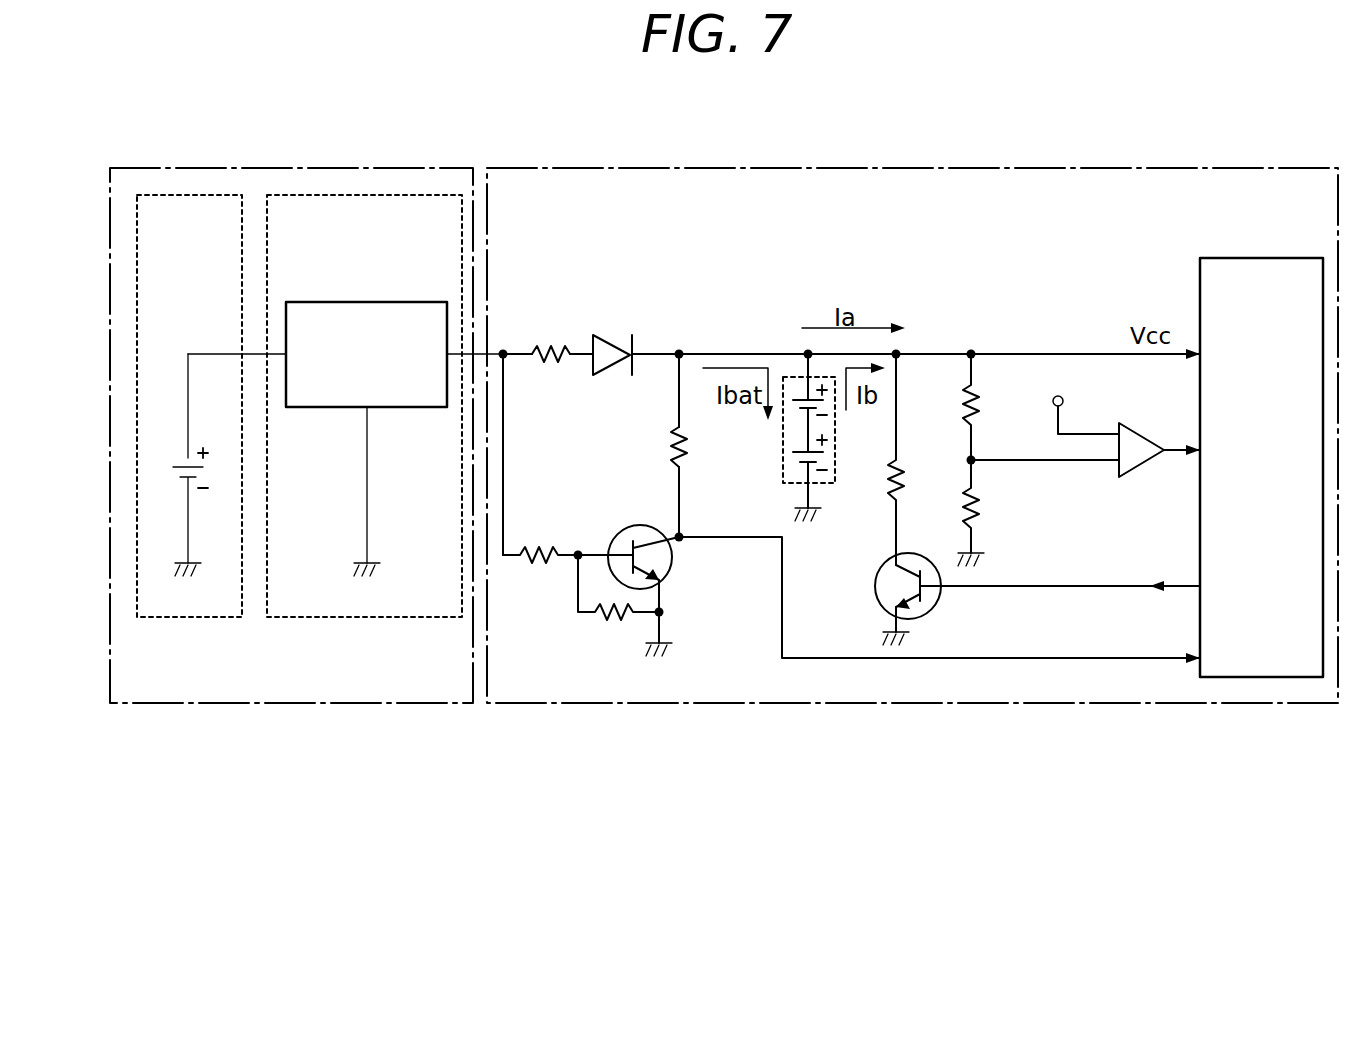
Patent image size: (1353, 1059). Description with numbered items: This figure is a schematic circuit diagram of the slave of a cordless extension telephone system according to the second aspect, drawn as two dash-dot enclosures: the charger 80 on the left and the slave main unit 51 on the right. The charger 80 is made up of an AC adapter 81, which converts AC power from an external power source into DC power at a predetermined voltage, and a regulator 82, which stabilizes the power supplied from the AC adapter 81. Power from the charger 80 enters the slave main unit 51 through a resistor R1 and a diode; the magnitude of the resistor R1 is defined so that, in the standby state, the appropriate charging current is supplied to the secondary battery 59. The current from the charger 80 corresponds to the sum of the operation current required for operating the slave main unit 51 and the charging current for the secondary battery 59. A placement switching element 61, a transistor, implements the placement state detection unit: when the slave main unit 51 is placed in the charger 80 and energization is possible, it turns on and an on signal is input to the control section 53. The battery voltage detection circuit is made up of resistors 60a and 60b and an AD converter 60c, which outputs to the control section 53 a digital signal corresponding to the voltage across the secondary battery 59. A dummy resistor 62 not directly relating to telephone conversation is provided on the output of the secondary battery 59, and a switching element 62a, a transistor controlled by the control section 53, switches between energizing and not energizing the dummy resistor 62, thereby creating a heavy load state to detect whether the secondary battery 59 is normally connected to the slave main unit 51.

The charger 80 is at (258, 705).
The AC adapter 81 is at (186, 195).
The regulator 82 is at (372, 195).
The slave main unit 51 is at (912, 168).
The control section 53 is at (1266, 258).
The resistor R1 is at (553, 344).
The secondary battery 59 is at (783, 452).
The placement switching element 61 is at (673, 558).
The dummy resistor 62 is at (886, 490).
The switching element 62a is at (876, 586).
The resistor 60a is at (983, 408).
The resistor 60b is at (993, 506).
The AD converter 60c is at (1147, 423).